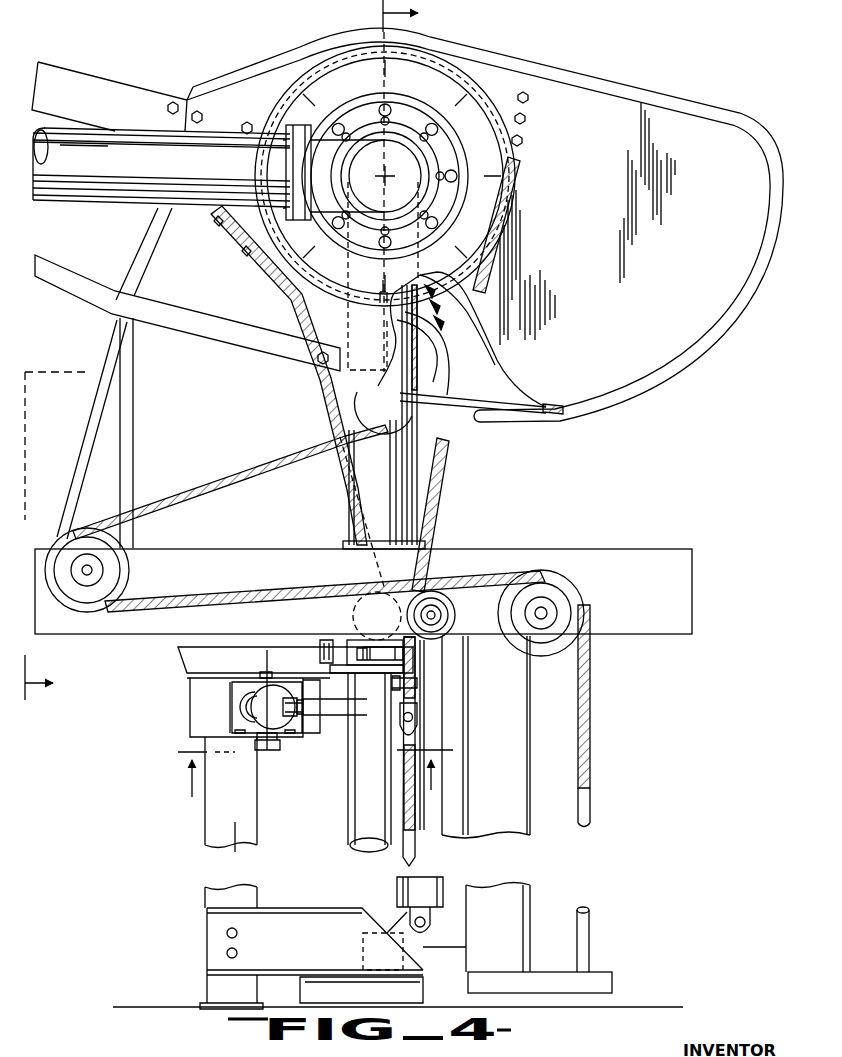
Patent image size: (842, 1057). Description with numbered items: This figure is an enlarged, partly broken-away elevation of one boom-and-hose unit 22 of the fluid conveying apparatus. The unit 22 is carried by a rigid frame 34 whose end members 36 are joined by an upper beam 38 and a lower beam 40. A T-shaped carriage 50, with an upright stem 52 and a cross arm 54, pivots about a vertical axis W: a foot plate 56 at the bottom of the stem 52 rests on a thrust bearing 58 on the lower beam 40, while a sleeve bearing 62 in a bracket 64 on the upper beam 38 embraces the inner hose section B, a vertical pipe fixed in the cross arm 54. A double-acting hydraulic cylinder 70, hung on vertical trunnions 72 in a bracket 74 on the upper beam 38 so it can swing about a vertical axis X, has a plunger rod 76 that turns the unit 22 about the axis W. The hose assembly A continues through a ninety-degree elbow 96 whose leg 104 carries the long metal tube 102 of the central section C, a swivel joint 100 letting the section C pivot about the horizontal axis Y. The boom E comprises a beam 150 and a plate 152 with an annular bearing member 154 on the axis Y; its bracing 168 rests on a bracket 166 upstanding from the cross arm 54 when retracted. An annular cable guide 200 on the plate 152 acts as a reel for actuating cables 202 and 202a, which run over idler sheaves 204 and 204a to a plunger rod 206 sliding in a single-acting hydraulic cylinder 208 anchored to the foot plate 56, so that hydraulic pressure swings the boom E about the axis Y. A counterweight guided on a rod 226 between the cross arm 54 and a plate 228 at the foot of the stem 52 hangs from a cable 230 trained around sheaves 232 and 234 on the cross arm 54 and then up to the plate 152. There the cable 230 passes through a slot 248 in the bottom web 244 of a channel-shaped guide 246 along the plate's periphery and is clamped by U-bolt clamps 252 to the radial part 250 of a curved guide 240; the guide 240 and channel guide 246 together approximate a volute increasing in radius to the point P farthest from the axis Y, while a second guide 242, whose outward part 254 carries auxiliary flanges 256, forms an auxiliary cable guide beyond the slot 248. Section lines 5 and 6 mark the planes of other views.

The unit 22 is at (716, 95).
The hose assembly A is at (662, 55).
The point P is at (778, 158).
The channel-shaped guide 246 is at (700, 336).
The plate 152 is at (640, 339).
The beam 150 is at (135, 98).
The boom E is at (78, 74).
The cable guide 200 is at (492, 212).
The bearing member 154 is at (480, 186).
The swivel joint 100 is at (456, 164).
The elbow 96 is at (369, 176).
The horizontal axis Y is at (392, 178).
The tube 102 is at (160, 175).
The leg 104 is at (290, 160).
The central section C is at (108, 207).
The actuating cable 202 is at (262, 114).
The bracing 168 is at (227, 338).
The bracket 166 is at (127, 383).
The U-bolt clamps 252 is at (448, 294).
The radially extending part 250 is at (434, 325).
The cable guide 240 is at (446, 346).
The part 254 is at (417, 403).
The auxiliary flanges 256 is at (345, 390).
The cable guide 242 is at (437, 371).
The bottom web 244 is at (455, 370).
The slot 248 is at (476, 420).
The actuating cable 202a is at (410, 862).
The T-shaped carriage 50 is at (400, 559).
The cross arm 54 is at (672, 584).
The sheave 234 is at (113, 578).
The sheave 232 is at (560, 581).
The idler sheave 204 is at (433, 590).
The idler sheave 204a is at (355, 597).
The cable 230 is at (220, 587).
The vertical axis X is at (262, 665).
The bracket 64 is at (317, 647).
The sleeve bearing 62 is at (347, 650).
The trunnions 72 is at (275, 660).
The upper beam 38 is at (232, 715).
The hydraulic cylinder 70 is at (247, 702).
The plunger rod 76 is at (330, 707).
The bracket 74 is at (300, 733).
The frame 34 is at (203, 820).
The end members 36 is at (228, 896).
The lower beam 40 is at (395, 978).
The thrust bearing 58 is at (370, 940).
The foot plate 56 is at (425, 955).
The hydraulic cylinder 208 is at (400, 890).
The vertical axis W is at (365, 786).
The inner section B is at (362, 798).
The plunger rod 206 is at (378, 841).
The stem 52 is at (483, 903).
The rod 226 is at (585, 908).
The plate 228 is at (590, 985).
The section line 5 is at (237, 350).
The section line 6 is at (312, 773).